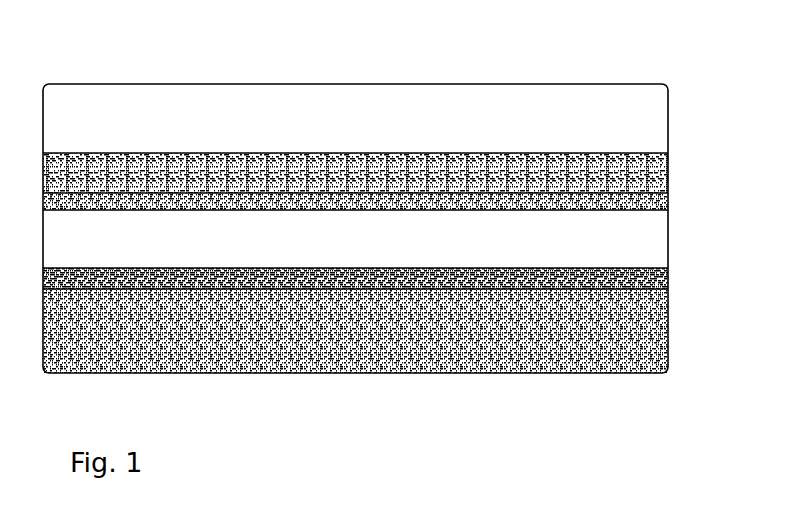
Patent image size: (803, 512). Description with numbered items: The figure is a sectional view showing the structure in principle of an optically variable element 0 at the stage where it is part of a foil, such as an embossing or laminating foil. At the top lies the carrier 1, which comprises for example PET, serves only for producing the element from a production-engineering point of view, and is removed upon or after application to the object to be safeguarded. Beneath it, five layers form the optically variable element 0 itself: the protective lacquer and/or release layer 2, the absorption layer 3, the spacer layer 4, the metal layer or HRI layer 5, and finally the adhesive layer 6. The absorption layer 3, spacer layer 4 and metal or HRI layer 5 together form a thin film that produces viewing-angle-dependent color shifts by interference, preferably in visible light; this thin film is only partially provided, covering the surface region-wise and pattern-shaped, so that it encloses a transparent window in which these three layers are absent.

The optically variable element 0 is at (303, 70).
The carrier 1 is at (655, 136).
The protective lacquer and/or release layer 2 is at (668, 170).
The absorption layer 3 is at (668, 202).
The spacer layer 4 is at (627, 243).
The metal layer or HRI layer 5 is at (668, 283).
The adhesive layer 6 is at (640, 338).